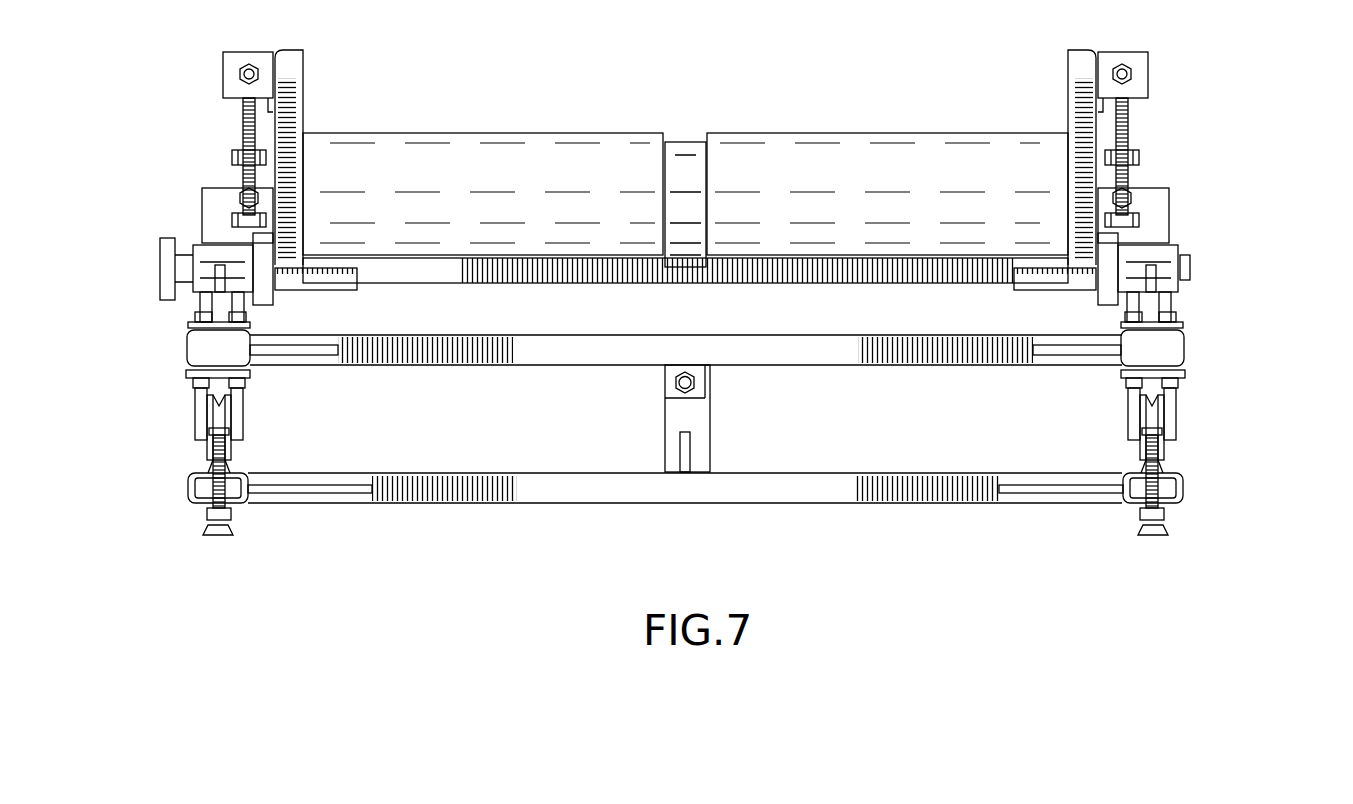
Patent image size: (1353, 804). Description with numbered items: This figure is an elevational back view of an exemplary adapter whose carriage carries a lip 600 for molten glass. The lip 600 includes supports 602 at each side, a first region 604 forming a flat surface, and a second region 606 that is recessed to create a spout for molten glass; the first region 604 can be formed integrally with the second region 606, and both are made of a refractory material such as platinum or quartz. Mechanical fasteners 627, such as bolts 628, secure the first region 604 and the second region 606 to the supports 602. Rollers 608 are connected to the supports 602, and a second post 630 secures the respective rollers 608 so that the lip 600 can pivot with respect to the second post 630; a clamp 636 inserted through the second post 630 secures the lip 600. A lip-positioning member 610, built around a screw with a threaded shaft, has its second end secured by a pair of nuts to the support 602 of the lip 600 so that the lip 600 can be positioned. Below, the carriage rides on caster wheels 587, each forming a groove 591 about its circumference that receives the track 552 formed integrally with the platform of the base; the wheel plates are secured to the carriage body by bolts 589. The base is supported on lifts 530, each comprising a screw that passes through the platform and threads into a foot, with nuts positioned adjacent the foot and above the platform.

The lip 600 is at (804, 86).
The support 602 is at (289, 62).
The first region 604 is at (470, 180).
The second region 606 is at (685, 190).
The rollers 608 is at (217, 257).
The lip-positioning member 610 is at (240, 133).
The mechanical fasteners 627 is at (1266, 159).
The bolts 628 is at (237, 222).
The second post 630 is at (200, 305).
The clamp 636 is at (162, 270).
The lift 530 is at (252, 554).
The track 552 is at (233, 467).
The wheel 587 is at (205, 452).
The bolts 589 is at (190, 387).
The groove 591 is at (212, 393).